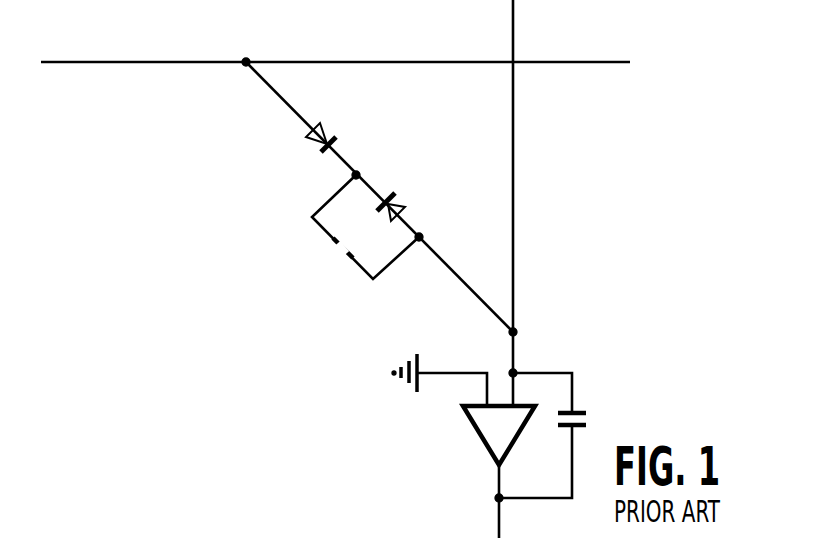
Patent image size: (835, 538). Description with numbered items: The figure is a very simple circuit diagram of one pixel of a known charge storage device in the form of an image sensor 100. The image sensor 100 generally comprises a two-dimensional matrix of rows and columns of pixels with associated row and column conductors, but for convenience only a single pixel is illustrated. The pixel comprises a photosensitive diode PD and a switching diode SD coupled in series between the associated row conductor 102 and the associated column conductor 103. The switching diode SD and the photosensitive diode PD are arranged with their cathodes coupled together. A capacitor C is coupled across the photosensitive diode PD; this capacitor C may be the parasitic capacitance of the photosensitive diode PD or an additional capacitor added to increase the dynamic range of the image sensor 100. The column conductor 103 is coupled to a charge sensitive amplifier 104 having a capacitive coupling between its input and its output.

The image sensor 100 is at (532, 34).
The row conductor 102 is at (430, 64).
The column conductor 103 is at (514, 178).
The charge sensitive amplifier 104 is at (456, 450).
The switching diode SD is at (330, 133).
The photosensitive diode PD is at (406, 211).
The capacitor C is at (333, 255).